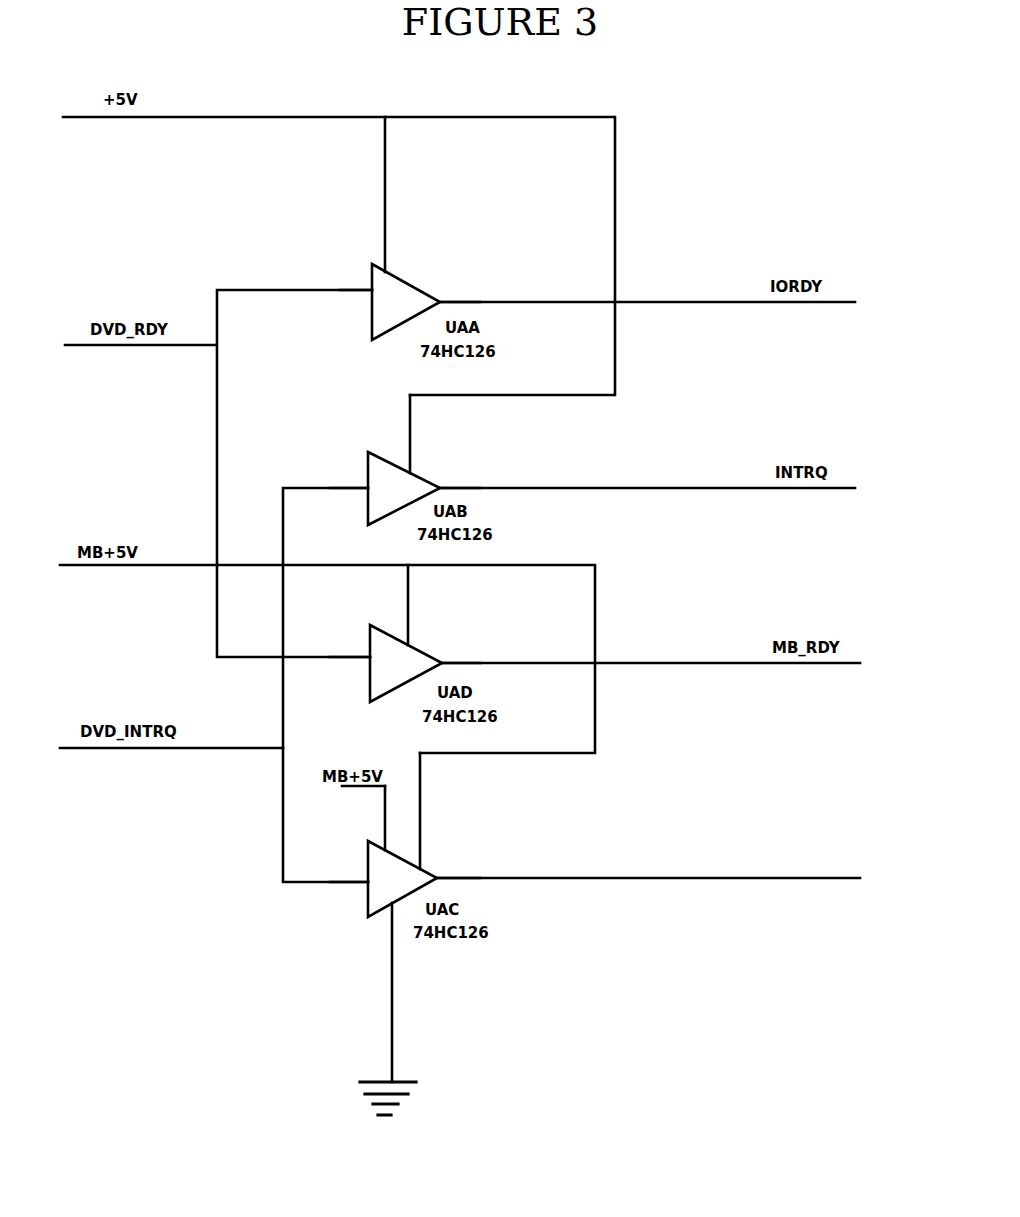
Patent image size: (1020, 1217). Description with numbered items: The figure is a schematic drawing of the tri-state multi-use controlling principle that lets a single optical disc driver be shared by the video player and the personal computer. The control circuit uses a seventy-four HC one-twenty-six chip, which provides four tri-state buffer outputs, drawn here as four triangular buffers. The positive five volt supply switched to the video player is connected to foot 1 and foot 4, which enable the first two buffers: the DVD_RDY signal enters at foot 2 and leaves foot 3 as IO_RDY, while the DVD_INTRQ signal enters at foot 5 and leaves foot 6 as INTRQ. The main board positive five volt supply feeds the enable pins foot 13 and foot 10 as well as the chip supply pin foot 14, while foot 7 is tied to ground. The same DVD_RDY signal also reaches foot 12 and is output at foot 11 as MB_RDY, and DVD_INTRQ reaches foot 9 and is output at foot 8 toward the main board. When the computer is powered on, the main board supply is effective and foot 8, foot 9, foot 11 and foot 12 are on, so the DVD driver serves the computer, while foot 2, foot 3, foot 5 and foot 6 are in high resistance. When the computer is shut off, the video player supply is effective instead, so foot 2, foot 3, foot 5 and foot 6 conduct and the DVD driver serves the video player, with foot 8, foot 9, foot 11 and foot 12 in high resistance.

The foot 1 is at (393, 194).
The foot 2 is at (356, 279).
The foot 3 is at (460, 291).
The foot 4 is at (403, 434).
The foot 5 is at (349, 479).
The foot 6 is at (460, 477).
The foot 7 is at (383, 992).
The foot 8 is at (458, 869).
The foot 9 is at (349, 872).
The foot 10 is at (431, 811).
The foot 11 is at (461, 654).
The foot 12 is at (350, 649).
The foot 13 is at (396, 605).
The foot 14 is at (372, 818).